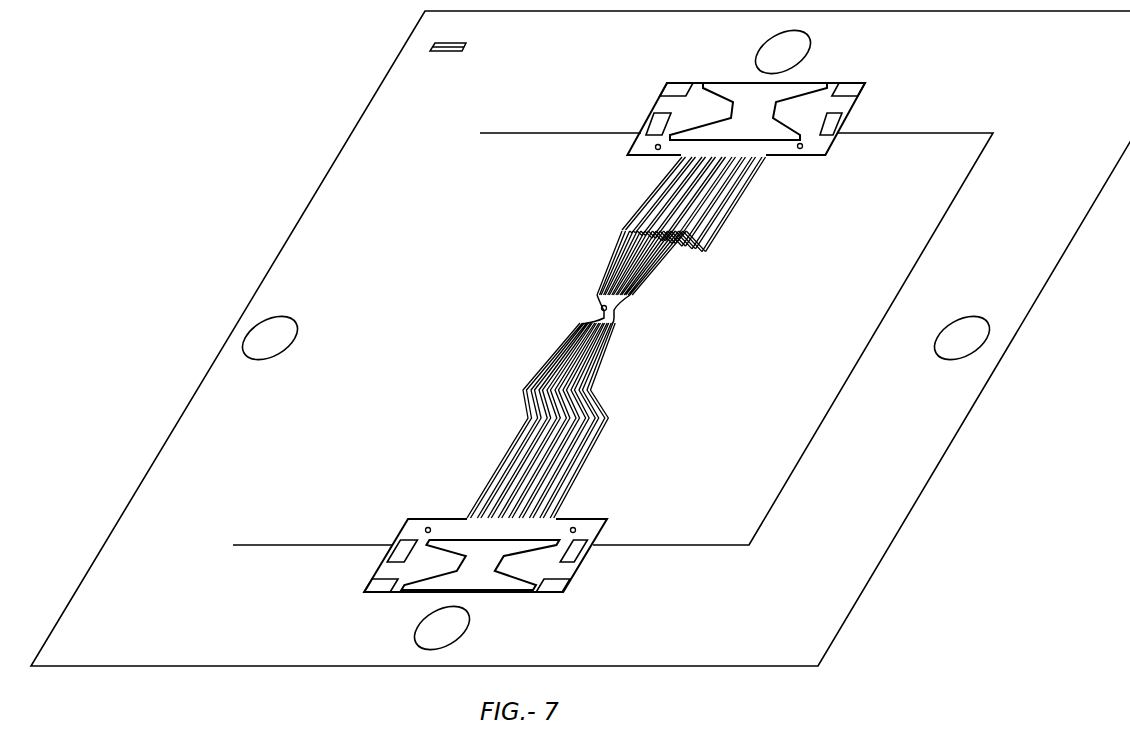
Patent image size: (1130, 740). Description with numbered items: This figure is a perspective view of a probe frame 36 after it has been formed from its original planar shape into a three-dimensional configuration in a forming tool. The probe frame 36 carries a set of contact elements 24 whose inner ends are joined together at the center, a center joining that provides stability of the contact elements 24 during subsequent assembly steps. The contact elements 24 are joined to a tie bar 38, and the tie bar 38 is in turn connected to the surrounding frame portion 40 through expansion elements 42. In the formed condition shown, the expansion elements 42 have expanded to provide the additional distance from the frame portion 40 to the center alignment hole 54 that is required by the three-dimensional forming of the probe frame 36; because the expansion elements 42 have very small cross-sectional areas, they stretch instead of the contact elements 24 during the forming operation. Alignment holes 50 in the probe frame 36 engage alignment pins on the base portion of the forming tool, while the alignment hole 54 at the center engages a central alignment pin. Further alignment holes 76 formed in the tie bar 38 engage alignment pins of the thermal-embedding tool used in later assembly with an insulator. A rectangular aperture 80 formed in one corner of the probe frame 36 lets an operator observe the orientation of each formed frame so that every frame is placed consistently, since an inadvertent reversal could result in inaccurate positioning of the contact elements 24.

The contact elements 24 is at (528, 463).
The probe frame 36 is at (304, 204).
The tie bar 38 is at (640, 158).
The frame portion 40 is at (915, 134).
The expansion elements 42 is at (683, 102).
The alignment holes 50 is at (297, 325).
The alignment hole 54 is at (601, 308).
The alignment holes 76 is at (802, 150).
The rectangular aperture 80 is at (466, 47).